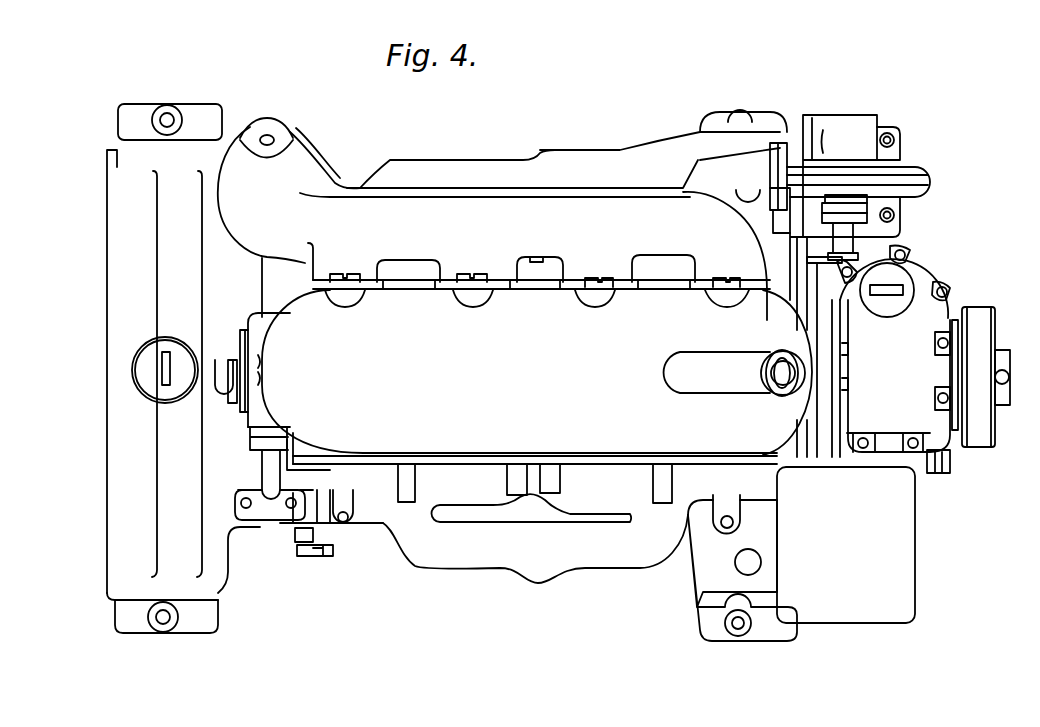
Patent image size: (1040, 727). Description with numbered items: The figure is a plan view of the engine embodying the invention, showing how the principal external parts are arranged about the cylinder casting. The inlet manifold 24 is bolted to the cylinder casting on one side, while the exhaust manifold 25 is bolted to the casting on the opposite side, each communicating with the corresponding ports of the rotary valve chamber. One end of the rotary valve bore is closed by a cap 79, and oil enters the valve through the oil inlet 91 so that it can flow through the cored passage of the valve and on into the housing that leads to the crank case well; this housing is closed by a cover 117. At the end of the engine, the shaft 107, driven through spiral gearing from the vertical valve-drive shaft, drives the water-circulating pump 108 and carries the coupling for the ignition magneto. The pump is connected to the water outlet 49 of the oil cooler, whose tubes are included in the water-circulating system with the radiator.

The inlet manifold 24 is at (535, 549).
The exhaust manifold 25 is at (492, 219).
The outlet 49 is at (767, 132).
The cap 79 is at (233, 403).
The oil inlet 91 is at (262, 456).
The shaft 107 is at (847, 243).
The water-circulating pump 108 is at (910, 167).
The cover 117 is at (917, 325).